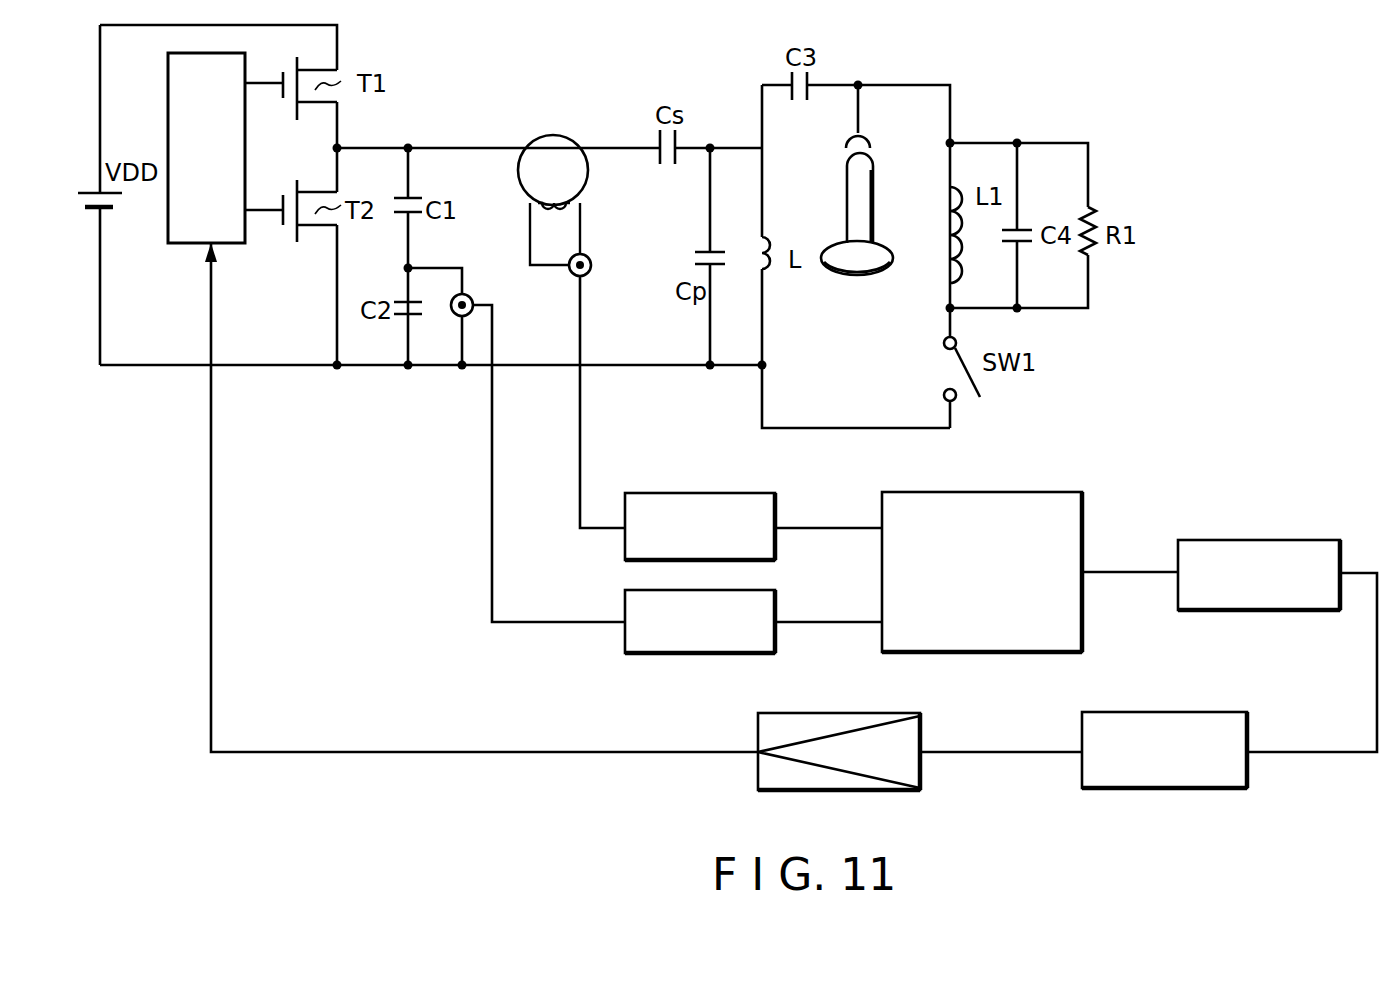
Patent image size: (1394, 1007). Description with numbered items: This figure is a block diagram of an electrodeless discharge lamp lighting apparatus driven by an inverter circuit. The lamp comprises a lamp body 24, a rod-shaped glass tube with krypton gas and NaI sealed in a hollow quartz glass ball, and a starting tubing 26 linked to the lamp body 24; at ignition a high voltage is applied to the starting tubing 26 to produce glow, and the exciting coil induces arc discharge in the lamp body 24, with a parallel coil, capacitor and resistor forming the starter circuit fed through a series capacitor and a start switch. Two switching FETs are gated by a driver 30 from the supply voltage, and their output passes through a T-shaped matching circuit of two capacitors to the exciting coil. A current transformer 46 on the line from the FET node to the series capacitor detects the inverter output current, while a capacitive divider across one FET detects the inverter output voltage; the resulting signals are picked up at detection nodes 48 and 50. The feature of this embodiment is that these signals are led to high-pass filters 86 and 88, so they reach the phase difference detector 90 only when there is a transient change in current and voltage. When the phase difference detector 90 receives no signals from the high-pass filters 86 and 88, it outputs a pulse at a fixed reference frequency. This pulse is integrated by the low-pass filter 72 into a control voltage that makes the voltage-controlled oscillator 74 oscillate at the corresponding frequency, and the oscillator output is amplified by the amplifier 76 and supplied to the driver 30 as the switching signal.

The driver 30 is at (240, 246).
The current transformer 46 is at (548, 134).
The detection node 48 is at (592, 265).
The detection node 50 is at (470, 296).
The starting tubing 26 is at (848, 200).
The lamp body 24 is at (885, 280).
The high-pass filter 86 is at (646, 495).
The high-pass filter 88 is at (657, 654).
The phase difference detector 90 is at (1033, 495).
The low-pass filter 72 is at (1302, 540).
The voltage-controlled oscillator 74 is at (1207, 712).
The amplifier 76 is at (922, 736).